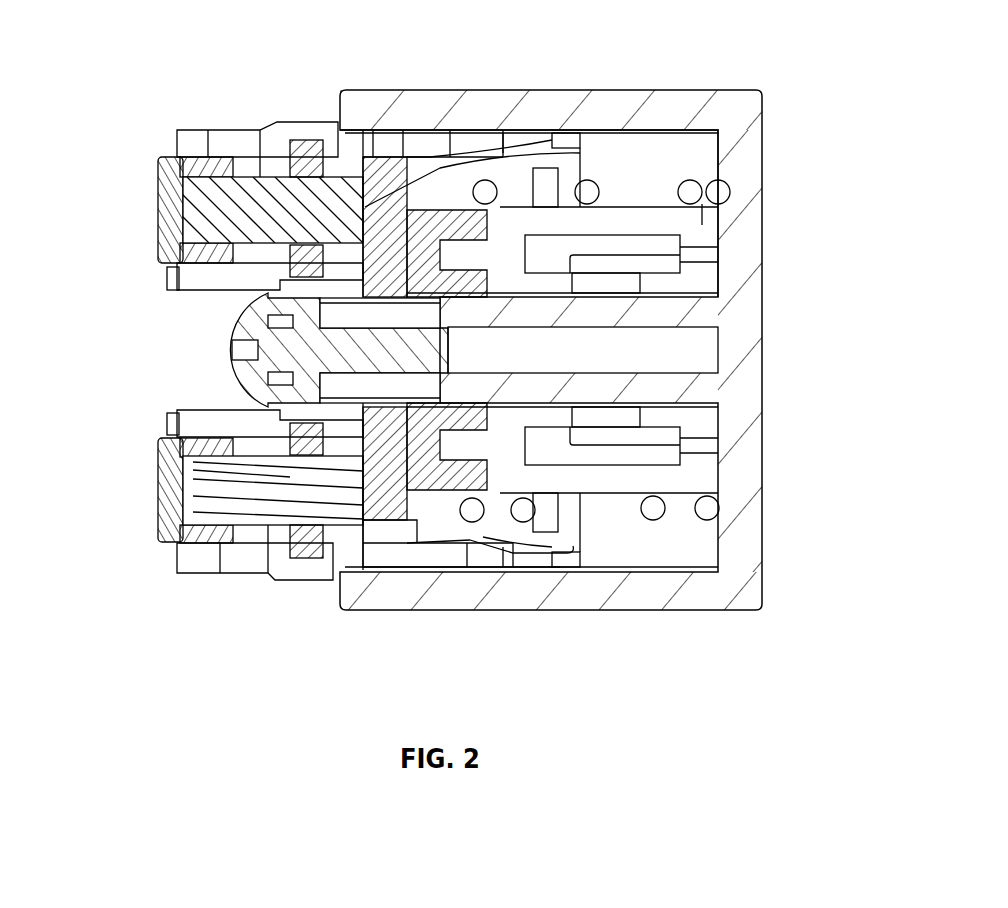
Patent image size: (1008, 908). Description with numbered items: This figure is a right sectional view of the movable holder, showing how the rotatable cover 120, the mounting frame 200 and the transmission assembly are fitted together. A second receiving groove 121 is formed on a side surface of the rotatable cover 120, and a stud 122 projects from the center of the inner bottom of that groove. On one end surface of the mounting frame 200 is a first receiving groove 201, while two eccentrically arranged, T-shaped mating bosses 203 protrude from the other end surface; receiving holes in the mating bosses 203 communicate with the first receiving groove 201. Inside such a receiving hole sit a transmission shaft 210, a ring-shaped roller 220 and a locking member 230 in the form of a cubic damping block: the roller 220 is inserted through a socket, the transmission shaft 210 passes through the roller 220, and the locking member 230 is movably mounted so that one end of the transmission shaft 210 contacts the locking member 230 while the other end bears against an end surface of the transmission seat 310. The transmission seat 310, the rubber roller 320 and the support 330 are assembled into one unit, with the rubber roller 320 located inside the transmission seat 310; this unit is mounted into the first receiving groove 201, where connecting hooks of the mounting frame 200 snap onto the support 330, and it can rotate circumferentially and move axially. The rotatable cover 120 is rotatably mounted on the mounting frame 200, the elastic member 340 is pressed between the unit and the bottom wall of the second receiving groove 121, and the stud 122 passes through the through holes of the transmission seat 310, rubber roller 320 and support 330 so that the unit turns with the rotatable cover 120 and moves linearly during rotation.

The rotatable cover 120 is at (742, 370).
The second receiving groove 121 is at (693, 157).
The stud 122 is at (665, 317).
The mounting frame 200 is at (448, 560).
The first receiving groove 201 is at (478, 543).
The mating bosses 203 is at (248, 560).
The transmission shaft 210 is at (178, 468).
The roller 220 is at (313, 560).
The locking member 230 is at (165, 533).
The transmission seat 310 is at (380, 205).
The rubber roller 320 is at (441, 225).
The support 330 is at (572, 222).
The elastic member 340 is at (653, 513).